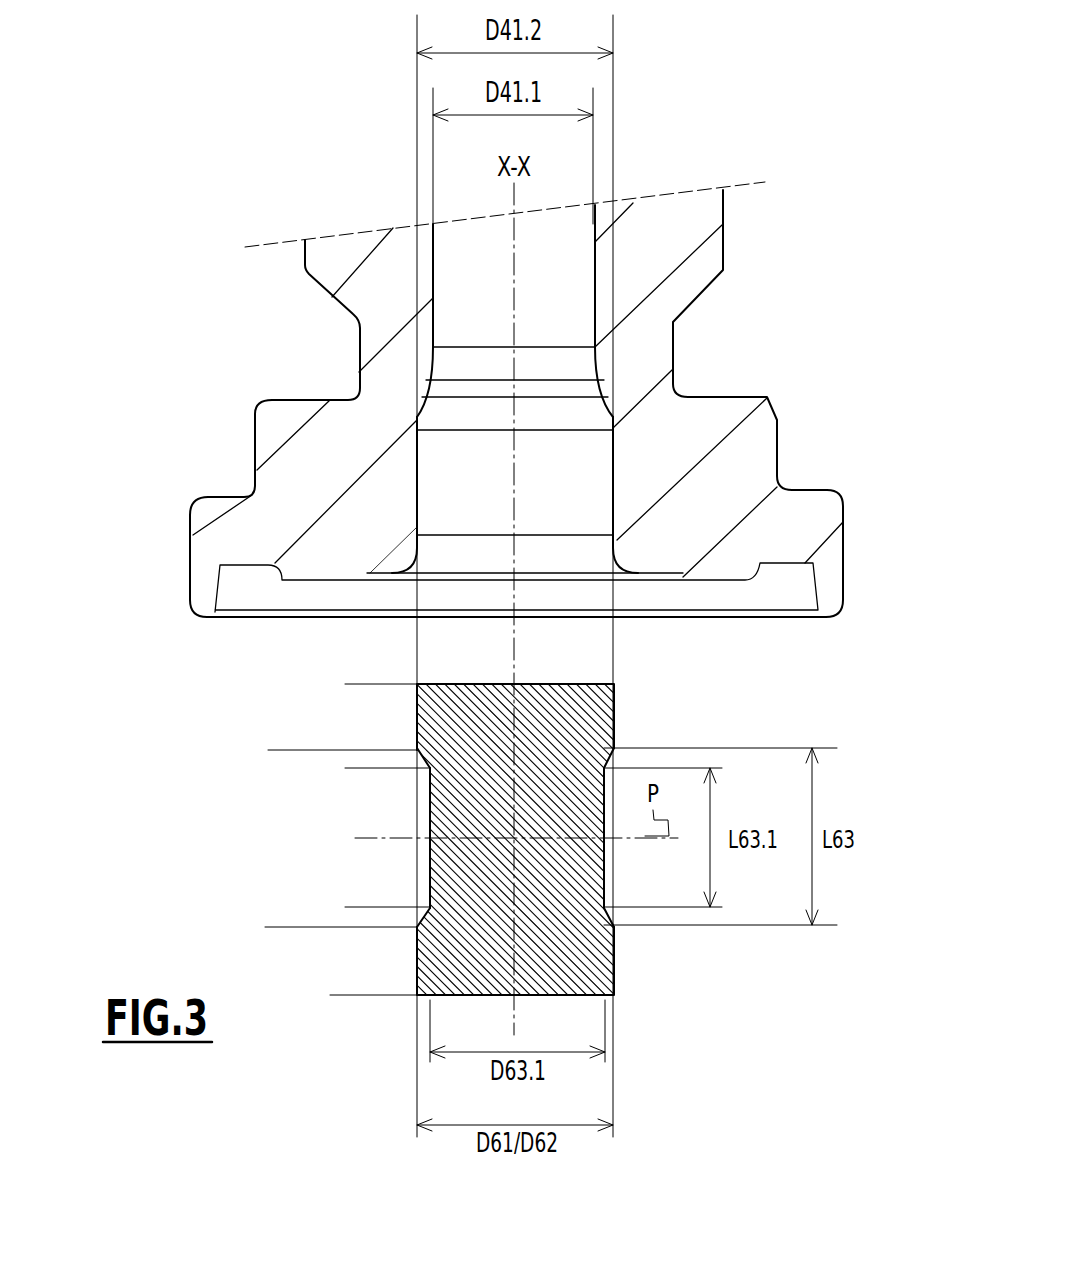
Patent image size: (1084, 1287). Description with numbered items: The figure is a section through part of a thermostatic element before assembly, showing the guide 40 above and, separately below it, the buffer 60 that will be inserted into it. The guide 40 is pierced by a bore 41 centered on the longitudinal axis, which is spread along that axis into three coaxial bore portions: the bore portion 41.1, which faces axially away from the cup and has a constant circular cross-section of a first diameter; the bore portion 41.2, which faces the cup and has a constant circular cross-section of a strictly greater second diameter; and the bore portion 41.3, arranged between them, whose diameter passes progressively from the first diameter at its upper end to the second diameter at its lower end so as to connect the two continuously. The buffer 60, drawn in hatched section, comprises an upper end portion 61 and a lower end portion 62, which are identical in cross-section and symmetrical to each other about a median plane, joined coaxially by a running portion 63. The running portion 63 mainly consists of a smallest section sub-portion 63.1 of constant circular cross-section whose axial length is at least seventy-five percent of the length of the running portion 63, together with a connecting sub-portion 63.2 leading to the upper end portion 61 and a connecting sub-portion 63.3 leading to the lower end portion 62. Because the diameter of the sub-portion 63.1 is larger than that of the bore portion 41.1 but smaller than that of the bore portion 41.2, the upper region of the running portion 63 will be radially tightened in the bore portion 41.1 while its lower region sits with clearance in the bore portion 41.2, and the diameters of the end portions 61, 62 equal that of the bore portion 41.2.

The guide 40 is at (336, 309).
The bore 41 is at (646, 389).
The bore portion 41.1 is at (590, 293).
The bore portion 41.2 is at (592, 476).
The bore portion 41.3 is at (588, 400).
The buffer 60 is at (417, 995).
The upper end portion 61 is at (340, 684).
The lower end portion 62 is at (340, 927).
The running portion 63 is at (413, 837).
The smallest section sub-portion 63.1 is at (340, 770).
The connecting sub-portion 63.2 is at (340, 750).
The connecting sub-portion 63.3 is at (446, 913).